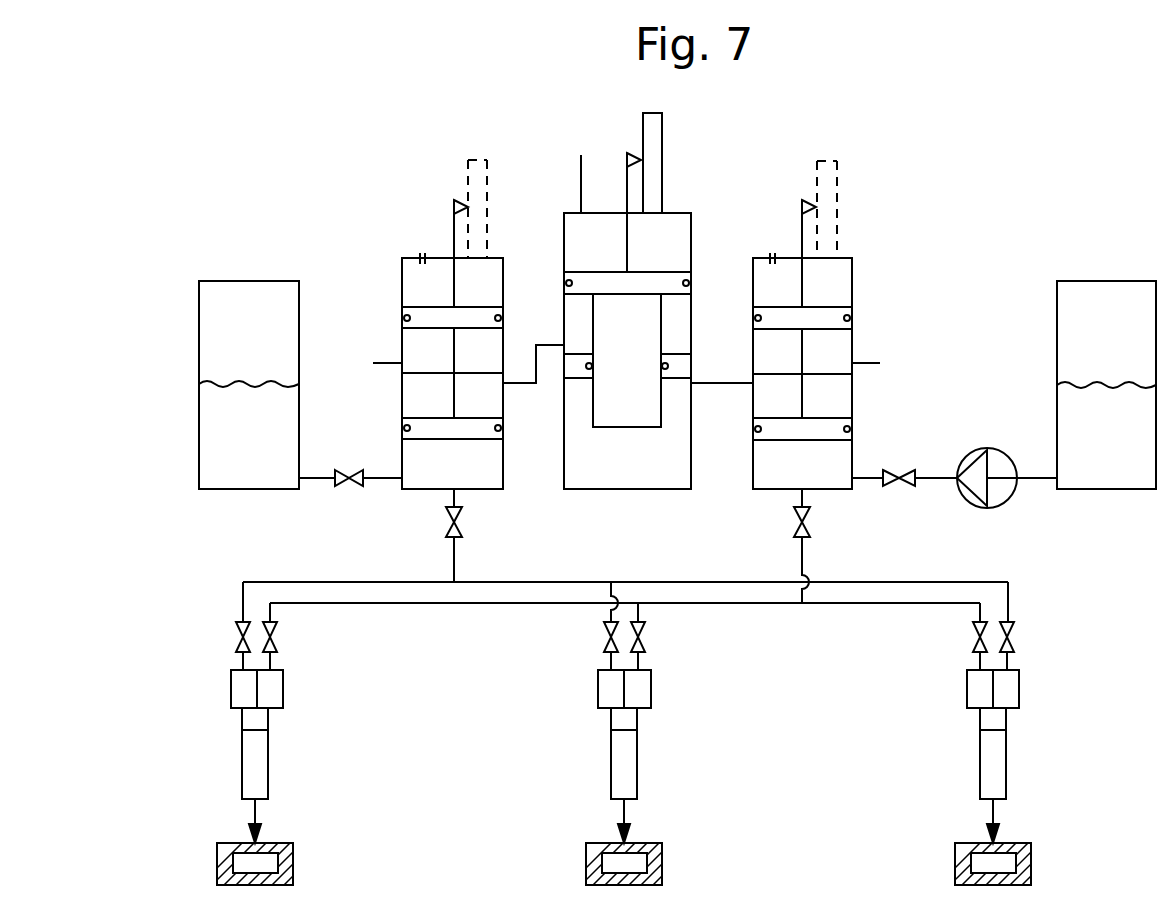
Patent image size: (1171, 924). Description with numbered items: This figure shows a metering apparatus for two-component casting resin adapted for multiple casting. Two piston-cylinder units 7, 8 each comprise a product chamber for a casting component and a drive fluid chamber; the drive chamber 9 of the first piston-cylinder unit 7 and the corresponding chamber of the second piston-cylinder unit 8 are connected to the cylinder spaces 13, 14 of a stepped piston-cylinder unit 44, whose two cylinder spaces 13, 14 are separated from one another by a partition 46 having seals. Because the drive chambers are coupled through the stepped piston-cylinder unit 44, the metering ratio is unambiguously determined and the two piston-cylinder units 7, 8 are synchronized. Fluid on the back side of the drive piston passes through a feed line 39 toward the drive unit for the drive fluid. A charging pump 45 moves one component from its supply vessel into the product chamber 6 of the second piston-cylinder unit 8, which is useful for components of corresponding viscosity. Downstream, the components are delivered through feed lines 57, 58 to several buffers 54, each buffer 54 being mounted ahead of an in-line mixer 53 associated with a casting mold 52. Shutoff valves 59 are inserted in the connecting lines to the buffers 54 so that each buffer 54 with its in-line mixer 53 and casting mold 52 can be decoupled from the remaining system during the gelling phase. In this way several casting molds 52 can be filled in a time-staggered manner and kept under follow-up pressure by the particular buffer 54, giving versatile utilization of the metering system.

The product chamber 6 is at (809, 476).
The piston-cylinder unit 7 is at (400, 258).
The piston-cylinder unit 8 is at (857, 257).
The drive fluid chamber 9 is at (487, 409).
The cylinder space 13 is at (578, 313).
The cylinder space 14 is at (636, 301).
The feed line 39 is at (581, 183).
The stepped piston-cylinder unit 44 is at (692, 307).
The charging pump 45 is at (996, 451).
The partition 46 is at (683, 368).
The casting mold 52 is at (265, 862).
The in-line mixer 53 is at (258, 762).
The buffer 54 is at (275, 688).
The feed line 57 is at (718, 606).
The feed line 58 is at (717, 581).
The shutoff valve 59 is at (236, 632).